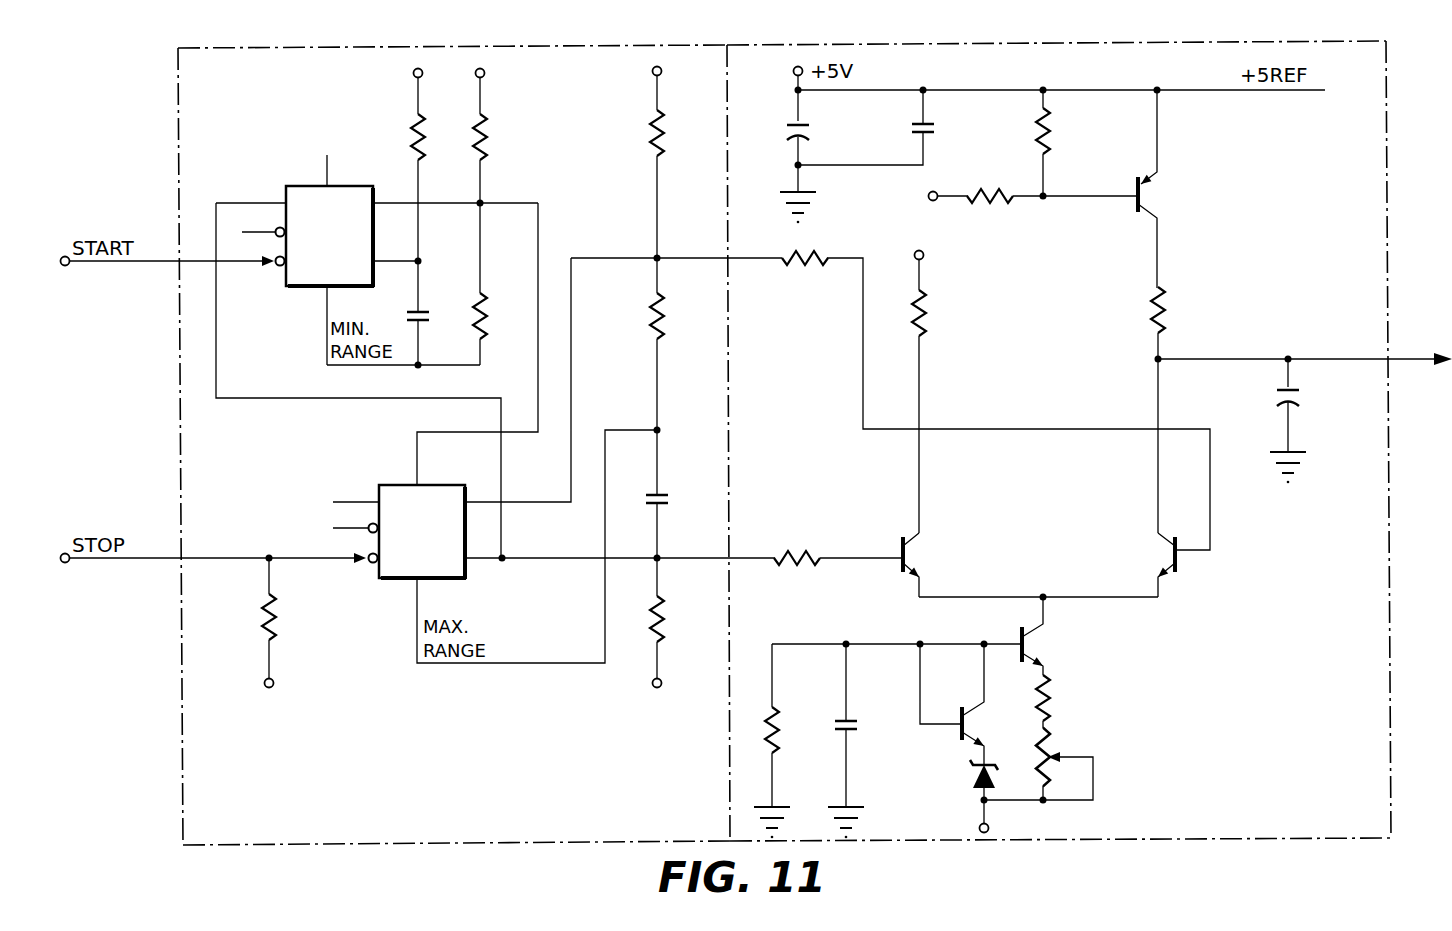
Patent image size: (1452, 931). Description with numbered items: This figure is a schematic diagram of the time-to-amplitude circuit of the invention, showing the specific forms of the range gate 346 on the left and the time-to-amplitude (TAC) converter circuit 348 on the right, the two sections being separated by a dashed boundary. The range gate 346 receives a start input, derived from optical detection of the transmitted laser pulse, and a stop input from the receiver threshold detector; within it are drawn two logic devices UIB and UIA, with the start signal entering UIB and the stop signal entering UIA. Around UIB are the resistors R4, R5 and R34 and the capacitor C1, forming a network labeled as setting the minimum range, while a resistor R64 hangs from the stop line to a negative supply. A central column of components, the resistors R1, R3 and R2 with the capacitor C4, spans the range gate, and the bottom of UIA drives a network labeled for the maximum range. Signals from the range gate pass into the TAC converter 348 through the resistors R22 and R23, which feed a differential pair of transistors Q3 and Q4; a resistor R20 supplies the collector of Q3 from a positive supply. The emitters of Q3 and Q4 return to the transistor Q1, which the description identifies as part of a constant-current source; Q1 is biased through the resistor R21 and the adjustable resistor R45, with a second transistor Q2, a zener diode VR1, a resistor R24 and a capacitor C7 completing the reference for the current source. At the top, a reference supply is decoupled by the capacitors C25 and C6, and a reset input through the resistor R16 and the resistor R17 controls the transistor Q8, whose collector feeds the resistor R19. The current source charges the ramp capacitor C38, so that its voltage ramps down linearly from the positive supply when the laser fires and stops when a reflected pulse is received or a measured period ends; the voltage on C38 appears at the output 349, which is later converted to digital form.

The range gate 346 is at (630, 26).
The time-to-amplitude (TAC) converter circuit 348 is at (1178, 43).
The output of the TAC converter 349 is at (1418, 358).
The range gate flip-flop UIB is at (330, 260).
The range gate flip-flop UIA is at (554, 460).
The resistor R4 is at (408, 186).
The resistor R5 is at (499, 177).
The resistor R34 is at (501, 329).
The capacitor C1 is at (433, 335).
The resistor R64 is at (289, 625).
The resistor R1 is at (676, 176).
The resistor R3 is at (672, 394).
The capacitor C4 is at (672, 542).
The resistor R2 is at (676, 645).
The resistor R22 is at (890, 400).
The resistor R23 is at (838, 547).
The resistor R20 is at (943, 388).
The transistor Q3 is at (925, 565).
The transistor Q4 is at (1153, 565).
The transistor Q1 is at (1047, 636).
The resistor R21 is at (1064, 701).
The potentiometer R45 is at (1038, 763).
The resistor R24 is at (788, 741).
The capacitor C7 is at (857, 741).
The transistor Q2 is at (966, 704).
The zener diode VR1 is at (979, 800).
The capacitor C25 is at (817, 161).
The capacitor C6 is at (880, 126).
The resistor R17 is at (1064, 143).
The resistor R16 is at (992, 187).
The transistor Q8 is at (1162, 188).
The resistor R19 is at (1180, 410).
The ramp capacitor C38 is at (1267, 420).